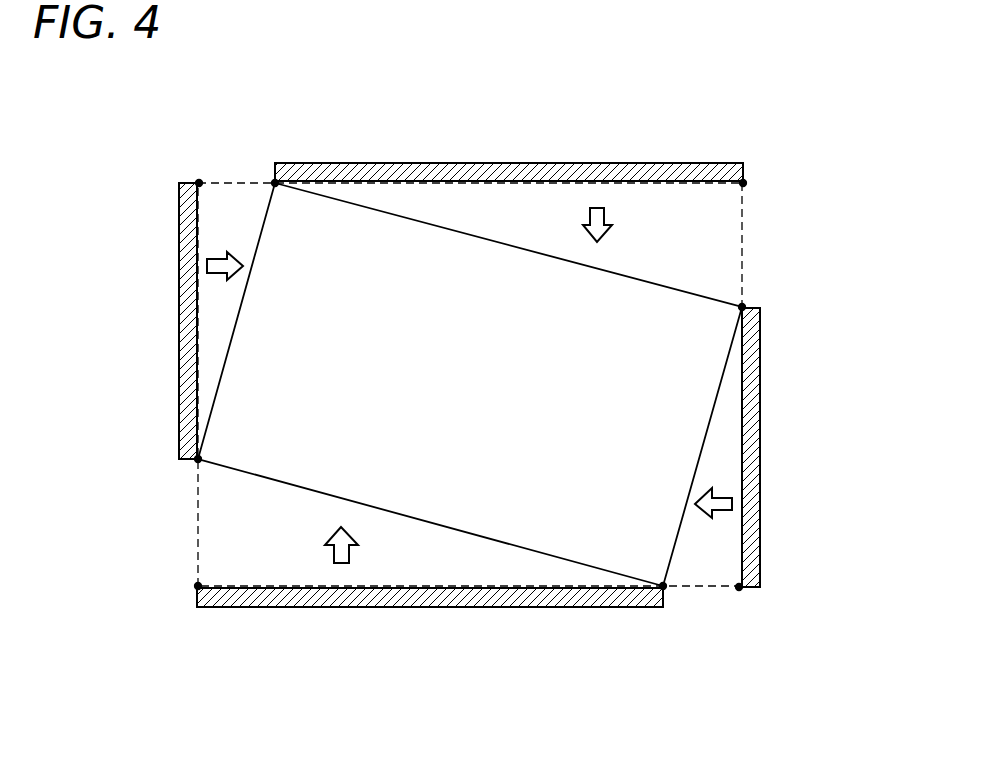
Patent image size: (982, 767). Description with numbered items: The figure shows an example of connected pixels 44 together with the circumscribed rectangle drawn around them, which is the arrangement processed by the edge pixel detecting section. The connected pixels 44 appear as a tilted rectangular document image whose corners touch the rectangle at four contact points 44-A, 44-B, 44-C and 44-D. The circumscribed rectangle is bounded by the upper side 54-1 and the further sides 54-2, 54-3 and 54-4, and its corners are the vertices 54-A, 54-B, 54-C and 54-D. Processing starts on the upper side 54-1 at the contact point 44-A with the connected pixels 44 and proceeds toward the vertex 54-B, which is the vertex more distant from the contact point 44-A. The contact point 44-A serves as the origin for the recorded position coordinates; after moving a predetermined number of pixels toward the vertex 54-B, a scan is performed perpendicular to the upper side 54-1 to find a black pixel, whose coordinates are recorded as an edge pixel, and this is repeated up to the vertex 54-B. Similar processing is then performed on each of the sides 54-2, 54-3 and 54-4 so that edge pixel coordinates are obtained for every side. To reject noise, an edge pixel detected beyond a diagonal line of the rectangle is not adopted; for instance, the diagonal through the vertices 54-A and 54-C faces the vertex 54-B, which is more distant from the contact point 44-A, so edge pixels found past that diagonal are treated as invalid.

The connected pixels 44 is at (657, 283).
The contact point 44-A is at (275, 183).
The contact point 44-B is at (742, 307).
The contact point 44-C is at (663, 587).
The contact point 44-D is at (198, 460).
The upper side 54-1 is at (237, 181).
The side 54-2 is at (743, 228).
The side 54-3 is at (702, 588).
The side 54-4 is at (197, 543).
The vertex 54-A is at (199, 183).
The vertex 54-B is at (743, 183).
The vertex 54-C is at (739, 587).
The vertex 54-D is at (198, 586).